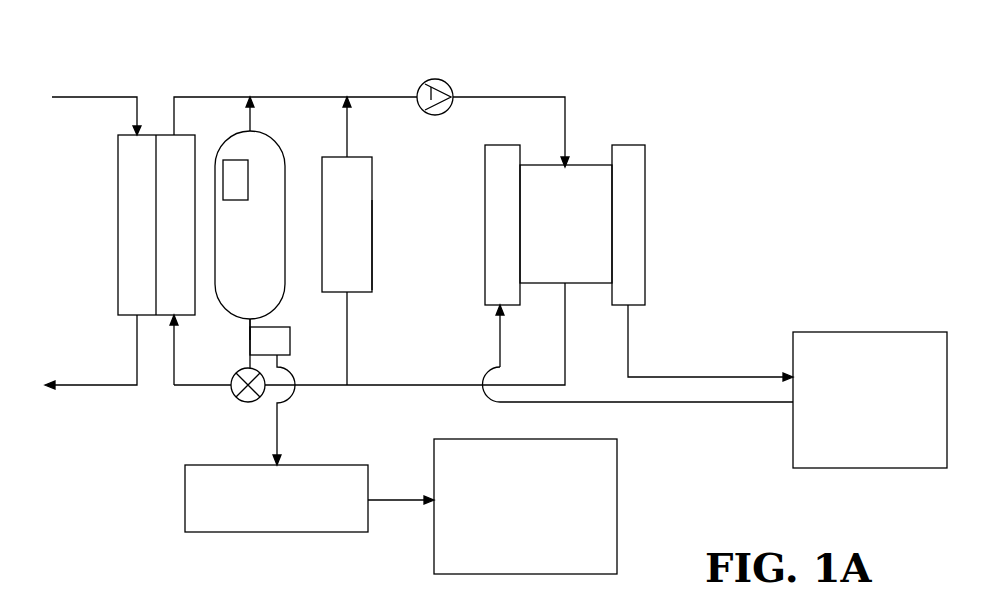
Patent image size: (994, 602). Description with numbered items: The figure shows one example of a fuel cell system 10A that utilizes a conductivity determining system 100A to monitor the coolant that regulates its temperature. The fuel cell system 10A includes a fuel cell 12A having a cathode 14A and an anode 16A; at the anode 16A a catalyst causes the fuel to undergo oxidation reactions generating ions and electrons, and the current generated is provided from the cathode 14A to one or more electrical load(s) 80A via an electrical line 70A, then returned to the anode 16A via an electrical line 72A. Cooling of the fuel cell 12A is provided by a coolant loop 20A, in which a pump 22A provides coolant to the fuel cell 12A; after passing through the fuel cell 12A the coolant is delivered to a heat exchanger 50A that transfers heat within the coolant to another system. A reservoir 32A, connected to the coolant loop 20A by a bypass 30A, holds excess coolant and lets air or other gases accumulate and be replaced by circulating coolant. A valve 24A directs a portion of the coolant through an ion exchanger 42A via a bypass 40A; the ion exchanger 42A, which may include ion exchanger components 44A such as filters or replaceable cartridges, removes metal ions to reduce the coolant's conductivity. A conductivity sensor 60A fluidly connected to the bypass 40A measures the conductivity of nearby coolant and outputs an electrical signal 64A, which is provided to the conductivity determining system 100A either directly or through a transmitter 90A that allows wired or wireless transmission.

The fuel cell system 10A is at (556, 59).
The fuel cell 12A is at (592, 140).
The cathode 14A is at (646, 168).
The anode 16A is at (484, 172).
The coolant loop 20A is at (385, 96).
The pump 22A is at (433, 84).
The valve 24A is at (237, 400).
The bypass 30A is at (348, 130).
The reservoir 32A is at (373, 262).
The bypass 40A is at (245, 130).
The ion exchanger 42A is at (236, 315).
The ion exchanger components 44A is at (249, 181).
The heat exchanger 50A is at (147, 134).
The conductivity sensor 60A is at (291, 343).
The electrical signal 64A is at (278, 442).
The electrical line 70A is at (633, 330).
The electrical line 72A is at (770, 404).
The electrical load(s) 80A is at (832, 331).
The transmitter 90A is at (248, 533).
The conductivity determining system 100A is at (618, 518).